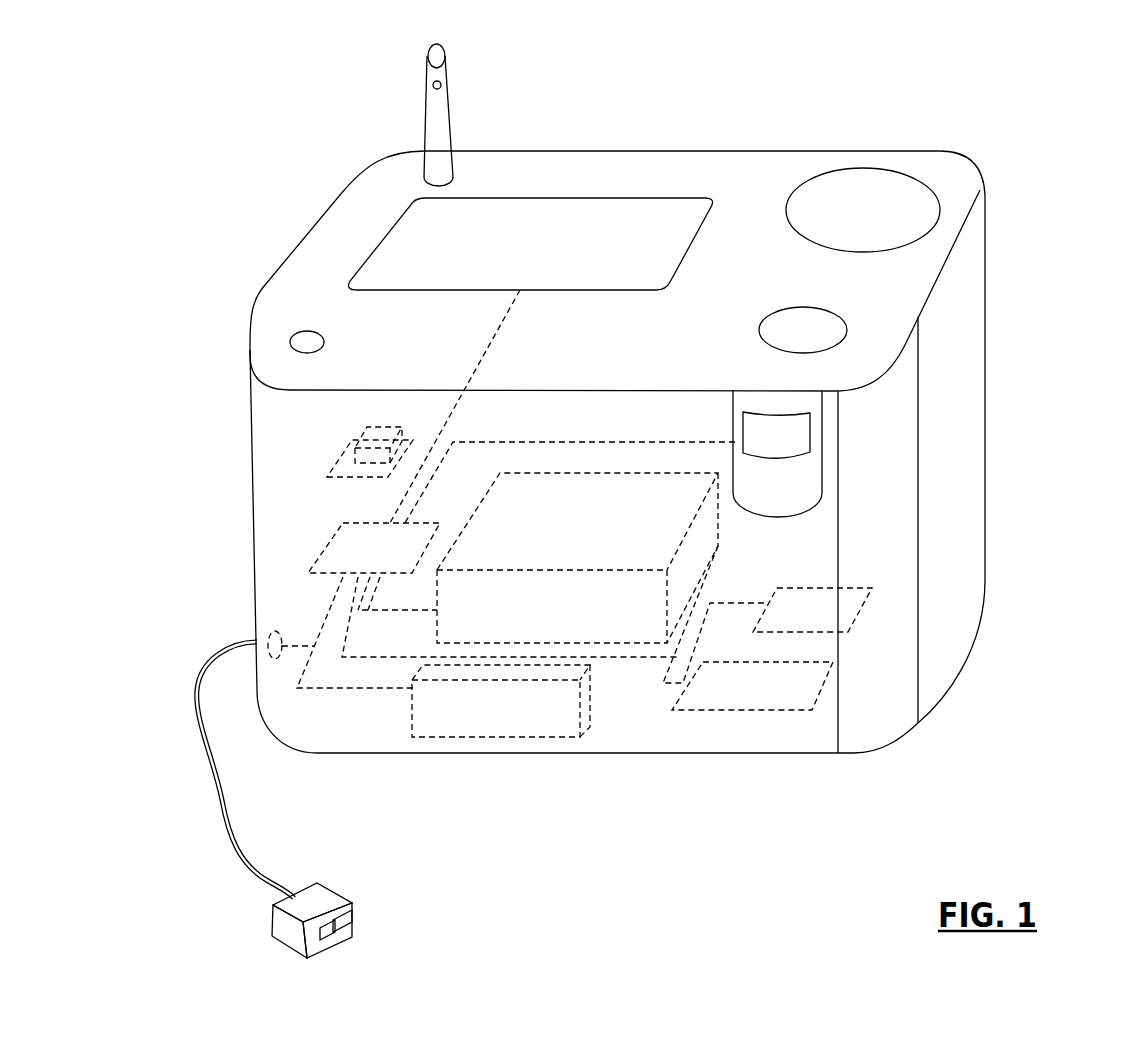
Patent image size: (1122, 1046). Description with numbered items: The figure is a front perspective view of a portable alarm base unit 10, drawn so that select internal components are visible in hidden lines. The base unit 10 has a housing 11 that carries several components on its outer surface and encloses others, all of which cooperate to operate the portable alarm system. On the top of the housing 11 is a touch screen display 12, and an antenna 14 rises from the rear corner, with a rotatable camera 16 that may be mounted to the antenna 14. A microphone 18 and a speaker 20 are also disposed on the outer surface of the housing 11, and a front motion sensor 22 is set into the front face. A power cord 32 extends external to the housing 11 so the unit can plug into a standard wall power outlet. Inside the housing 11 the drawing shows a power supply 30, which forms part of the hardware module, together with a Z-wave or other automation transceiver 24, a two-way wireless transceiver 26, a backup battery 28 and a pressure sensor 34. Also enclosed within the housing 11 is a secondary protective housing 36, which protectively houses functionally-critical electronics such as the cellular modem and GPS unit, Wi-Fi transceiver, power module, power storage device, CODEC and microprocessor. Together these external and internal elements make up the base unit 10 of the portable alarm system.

The portable alarm base unit 10 is at (1005, 150).
The housing 11 is at (856, 156).
The touch screen display 12 is at (618, 220).
The antenna 14 is at (424, 106).
The rotatable camera 16 is at (443, 86).
The microphone 18 is at (288, 340).
The speaker 20 is at (820, 325).
The front motion sensor 22 is at (793, 442).
The automation transceiver 24 is at (864, 614).
The two-way wireless transceiver 26 is at (750, 694).
The backup battery 28 is at (499, 715).
The power supply 30 is at (347, 546).
The power cord 32 is at (228, 829).
The pressure sensor 34 is at (330, 462).
The secondary protective housing 36 is at (690, 566).